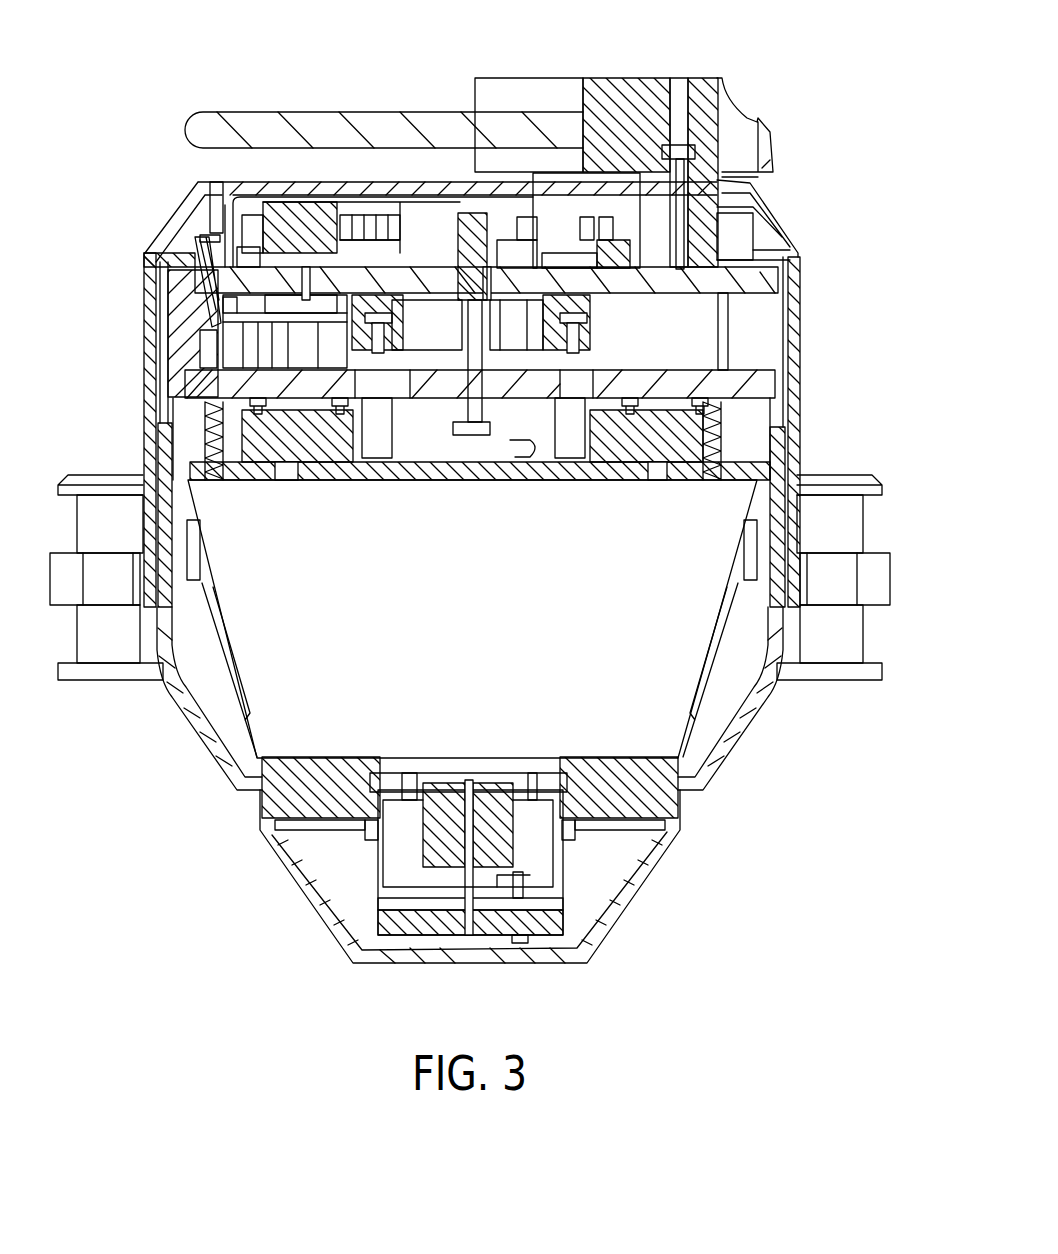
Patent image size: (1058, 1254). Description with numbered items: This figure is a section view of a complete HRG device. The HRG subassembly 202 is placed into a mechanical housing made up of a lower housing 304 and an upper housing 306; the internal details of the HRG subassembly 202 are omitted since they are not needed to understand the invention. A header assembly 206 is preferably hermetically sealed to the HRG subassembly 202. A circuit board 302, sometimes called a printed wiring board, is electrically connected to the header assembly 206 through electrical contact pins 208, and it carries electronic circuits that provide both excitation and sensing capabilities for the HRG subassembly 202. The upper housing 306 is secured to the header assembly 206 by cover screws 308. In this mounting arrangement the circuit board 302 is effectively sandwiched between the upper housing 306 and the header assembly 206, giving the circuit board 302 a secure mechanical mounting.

The HRG subassembly 202 is at (680, 693).
The header assembly 206 is at (187, 377).
The electrical contact pins 208 is at (725, 350).
The circuit board 302 is at (772, 278).
The lower housing 304 is at (203, 730).
The upper housing 306 is at (188, 212).
The cover screws 308 is at (192, 317).